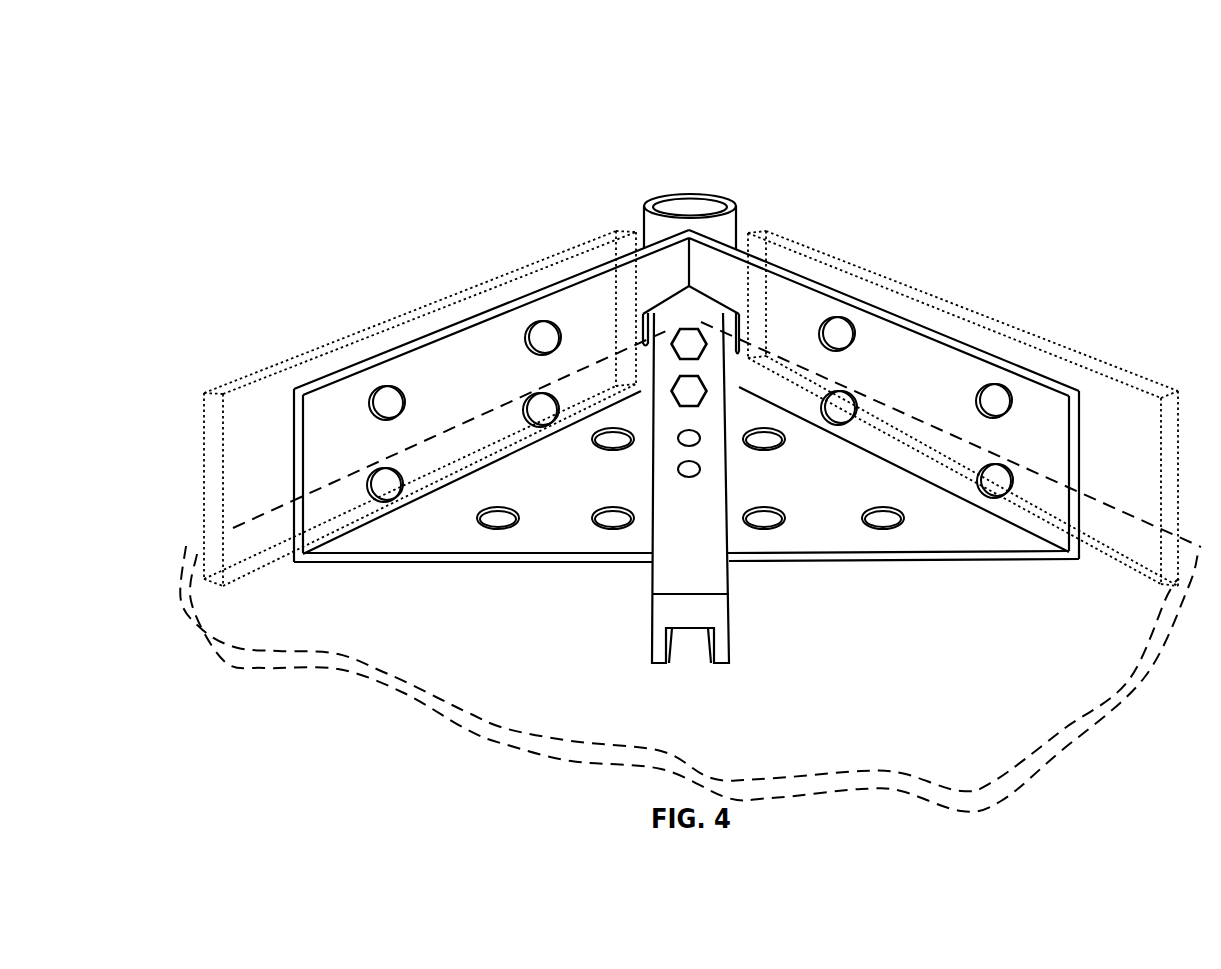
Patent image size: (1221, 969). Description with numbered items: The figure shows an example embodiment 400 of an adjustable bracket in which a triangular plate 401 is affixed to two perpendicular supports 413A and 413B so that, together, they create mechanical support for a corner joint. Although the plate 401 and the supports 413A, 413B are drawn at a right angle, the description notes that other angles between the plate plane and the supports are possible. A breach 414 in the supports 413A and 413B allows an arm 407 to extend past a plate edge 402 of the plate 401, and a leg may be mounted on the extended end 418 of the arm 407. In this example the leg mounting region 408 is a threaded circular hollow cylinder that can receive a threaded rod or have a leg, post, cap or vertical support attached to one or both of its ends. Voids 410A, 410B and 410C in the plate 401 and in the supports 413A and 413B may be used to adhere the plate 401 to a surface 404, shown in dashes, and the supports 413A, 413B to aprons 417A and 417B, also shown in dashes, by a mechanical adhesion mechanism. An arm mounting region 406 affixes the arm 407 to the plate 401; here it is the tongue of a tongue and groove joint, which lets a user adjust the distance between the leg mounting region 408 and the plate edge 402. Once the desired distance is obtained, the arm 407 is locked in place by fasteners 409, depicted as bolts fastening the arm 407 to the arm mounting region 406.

The example embodiment 400 is at (260, 110).
The triangular plate 401 is at (846, 507).
The plate edge 402 is at (741, 388).
The surface 404 is at (996, 737).
The arm mounting region 406 is at (680, 655).
The arm 407 is at (709, 515).
The leg mounting region 408 is at (733, 218).
The fasteners 409 is at (690, 388).
The void 410A is at (385, 402).
The void 410B is at (497, 517).
The void 410C is at (686, 472).
The perpendicular support 413A is at (471, 391).
The perpendicular support 413B is at (912, 370).
The breach 414 is at (735, 353).
The apron 417A is at (402, 312).
The apron 417B is at (920, 300).
The extended end 418 is at (690, 299).